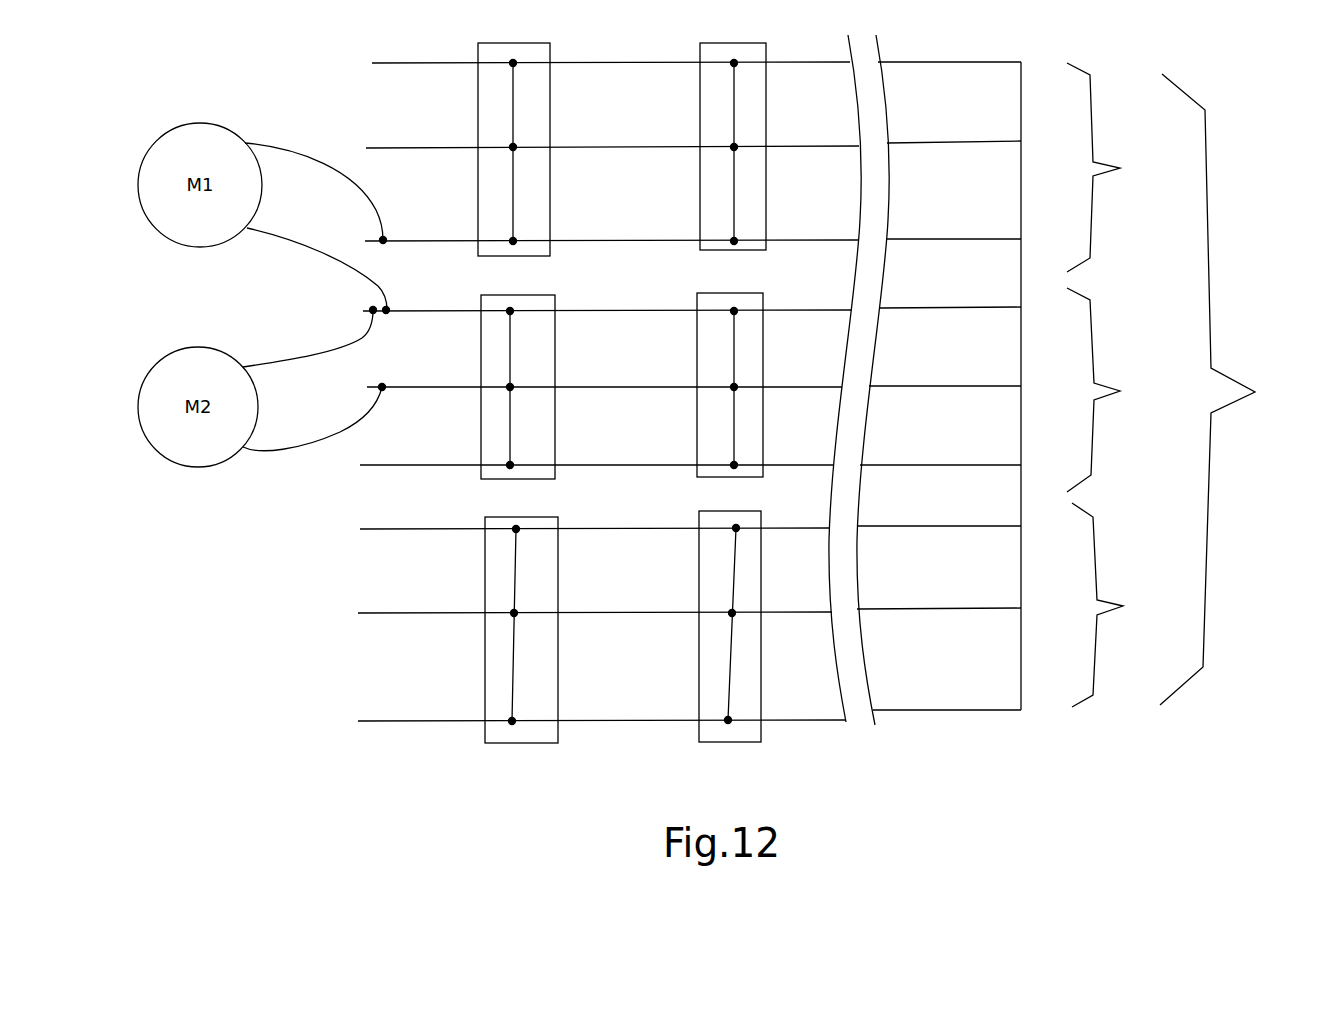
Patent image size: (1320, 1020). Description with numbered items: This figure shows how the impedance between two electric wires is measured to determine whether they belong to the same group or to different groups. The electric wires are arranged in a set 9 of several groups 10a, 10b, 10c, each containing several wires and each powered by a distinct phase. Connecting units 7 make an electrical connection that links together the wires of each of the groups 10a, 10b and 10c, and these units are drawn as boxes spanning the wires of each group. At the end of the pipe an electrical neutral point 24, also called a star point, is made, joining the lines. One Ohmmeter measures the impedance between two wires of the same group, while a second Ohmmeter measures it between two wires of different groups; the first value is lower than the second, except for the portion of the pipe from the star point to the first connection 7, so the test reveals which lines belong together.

The connecting unit 7 is at (481, 300).
The set 9 is at (1221, 389).
The group 10a is at (1115, 167).
The group 10b is at (1115, 390).
The group 10c is at (1121, 605).
The electrical neutral point 24 is at (1037, 688).